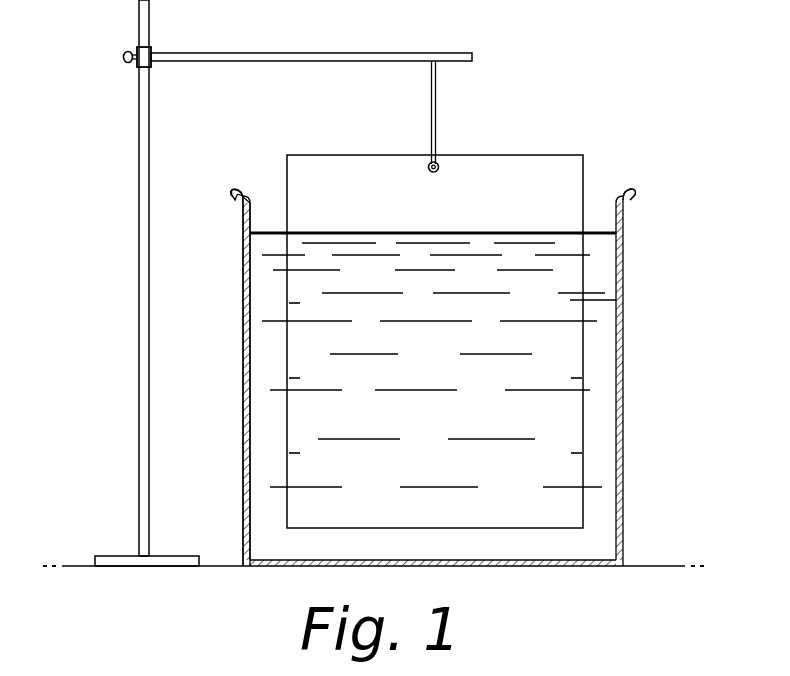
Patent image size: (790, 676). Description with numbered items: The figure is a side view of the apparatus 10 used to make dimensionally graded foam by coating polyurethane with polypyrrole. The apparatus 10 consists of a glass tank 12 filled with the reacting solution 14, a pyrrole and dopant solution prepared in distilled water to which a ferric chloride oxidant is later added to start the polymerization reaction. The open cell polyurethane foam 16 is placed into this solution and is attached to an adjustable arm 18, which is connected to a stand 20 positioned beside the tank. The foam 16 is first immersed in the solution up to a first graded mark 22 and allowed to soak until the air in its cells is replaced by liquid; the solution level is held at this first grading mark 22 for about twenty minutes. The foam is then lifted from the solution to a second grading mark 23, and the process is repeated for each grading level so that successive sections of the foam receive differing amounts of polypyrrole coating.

The apparatus 10 is at (582, 104).
The glass tank 12 is at (623, 368).
The reacting solution 14 is at (600, 268).
The polyurethane foam 16 is at (568, 171).
The adjustable arm 18 is at (372, 58).
The stand 20 is at (134, 149).
The first graded mark 22 is at (593, 220).
The second grading mark 23 is at (616, 300).